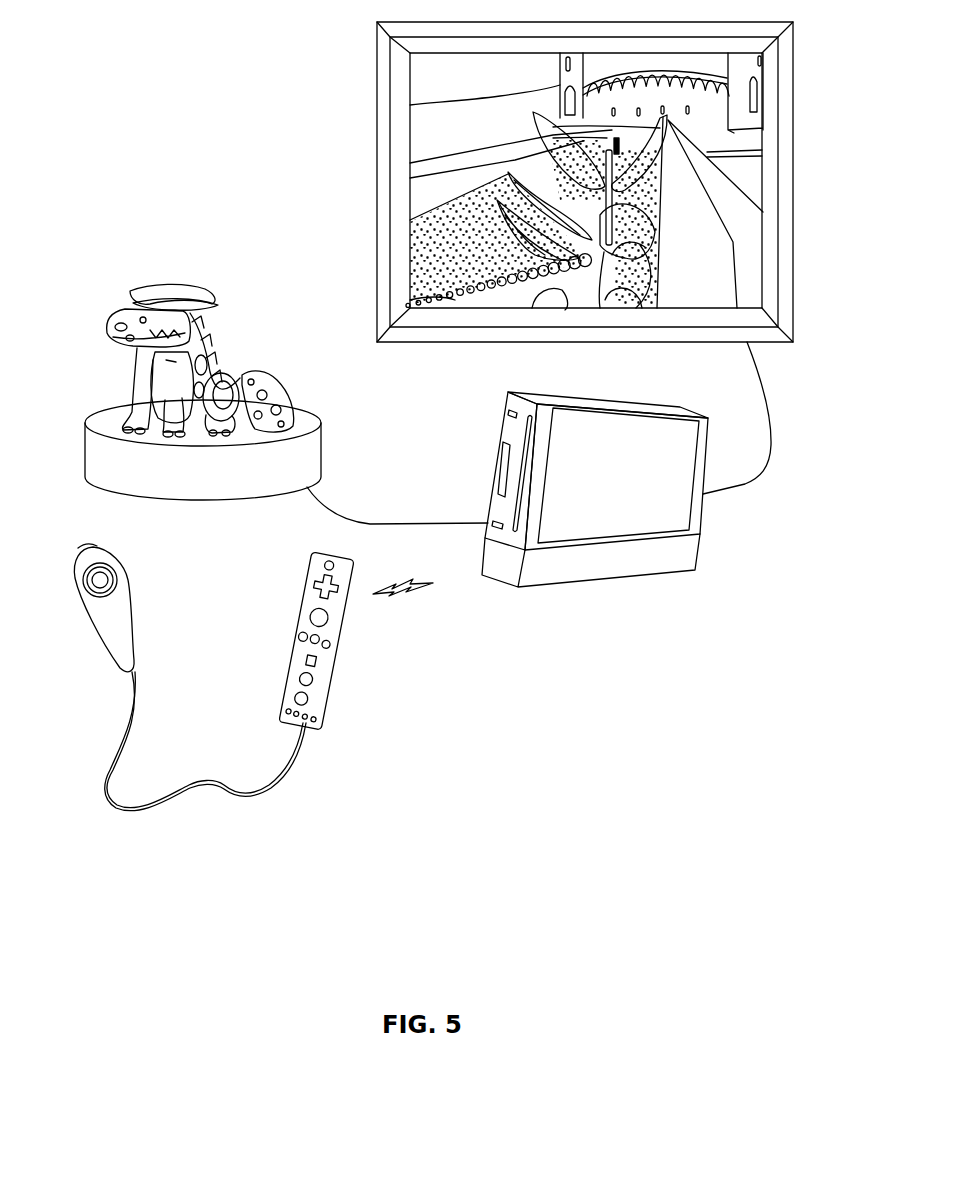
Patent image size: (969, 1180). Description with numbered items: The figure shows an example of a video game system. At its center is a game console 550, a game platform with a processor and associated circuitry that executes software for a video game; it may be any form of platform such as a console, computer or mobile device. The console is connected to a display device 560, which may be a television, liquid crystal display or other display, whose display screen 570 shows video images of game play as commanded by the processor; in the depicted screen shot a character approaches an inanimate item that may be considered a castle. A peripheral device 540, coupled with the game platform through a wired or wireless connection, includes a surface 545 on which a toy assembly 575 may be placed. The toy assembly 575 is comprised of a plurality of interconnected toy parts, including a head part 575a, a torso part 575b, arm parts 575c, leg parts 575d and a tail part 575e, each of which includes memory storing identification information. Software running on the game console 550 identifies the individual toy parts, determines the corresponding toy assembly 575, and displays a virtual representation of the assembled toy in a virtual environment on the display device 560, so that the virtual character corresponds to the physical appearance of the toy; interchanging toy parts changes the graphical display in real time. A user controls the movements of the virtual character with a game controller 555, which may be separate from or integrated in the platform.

The peripheral device 540 is at (225, 470).
The surface 545 is at (275, 437).
The game console 550 is at (630, 573).
The game controller 555 is at (340, 625).
The display device 560 is at (788, 307).
The display screen 570 is at (753, 220).
The toy assembly 575 is at (184, 357).
The head part 575a is at (127, 305).
The torso part 575b is at (167, 363).
The arm parts 575c is at (137, 386).
The leg parts 575d is at (227, 410).
The tail part 575e is at (268, 378).